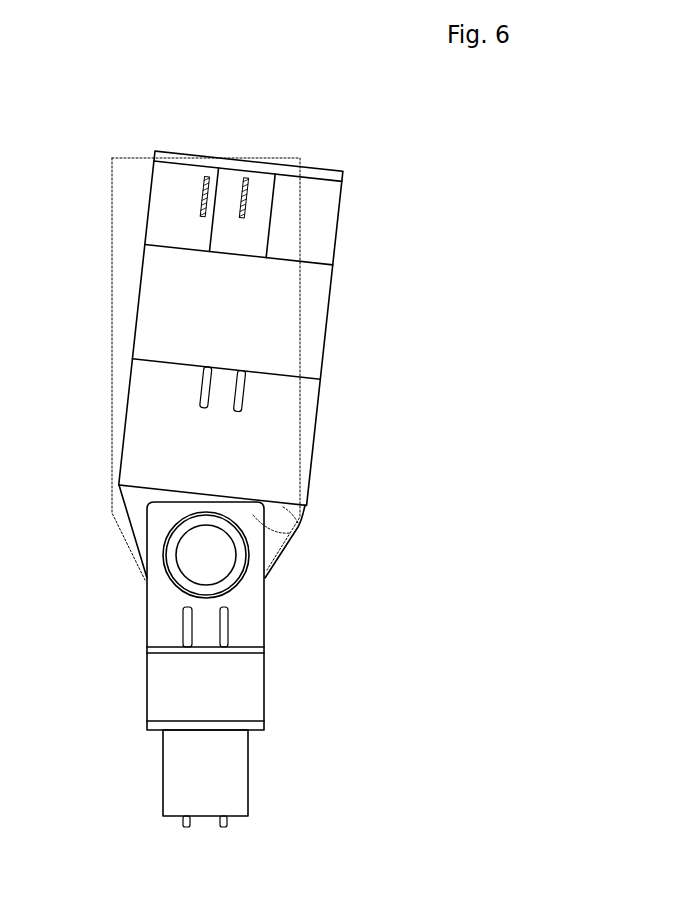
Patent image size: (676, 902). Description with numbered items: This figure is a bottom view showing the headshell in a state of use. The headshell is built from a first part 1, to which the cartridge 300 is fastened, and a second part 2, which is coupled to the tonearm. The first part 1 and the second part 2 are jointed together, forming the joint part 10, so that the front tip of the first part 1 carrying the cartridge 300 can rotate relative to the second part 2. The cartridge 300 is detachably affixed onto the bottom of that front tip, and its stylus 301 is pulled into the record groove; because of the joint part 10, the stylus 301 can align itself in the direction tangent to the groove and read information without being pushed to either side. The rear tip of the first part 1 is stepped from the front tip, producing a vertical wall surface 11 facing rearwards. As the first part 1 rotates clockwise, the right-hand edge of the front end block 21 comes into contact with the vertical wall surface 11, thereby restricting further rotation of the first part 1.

The first part 1 is at (267, 453).
The second part 2 is at (202, 664).
The joint part 10 is at (197, 562).
The vertical wall surface 11 is at (302, 527).
The front end block 21 is at (283, 533).
The cartridge 300 is at (302, 293).
The stylus 301 is at (245, 178).